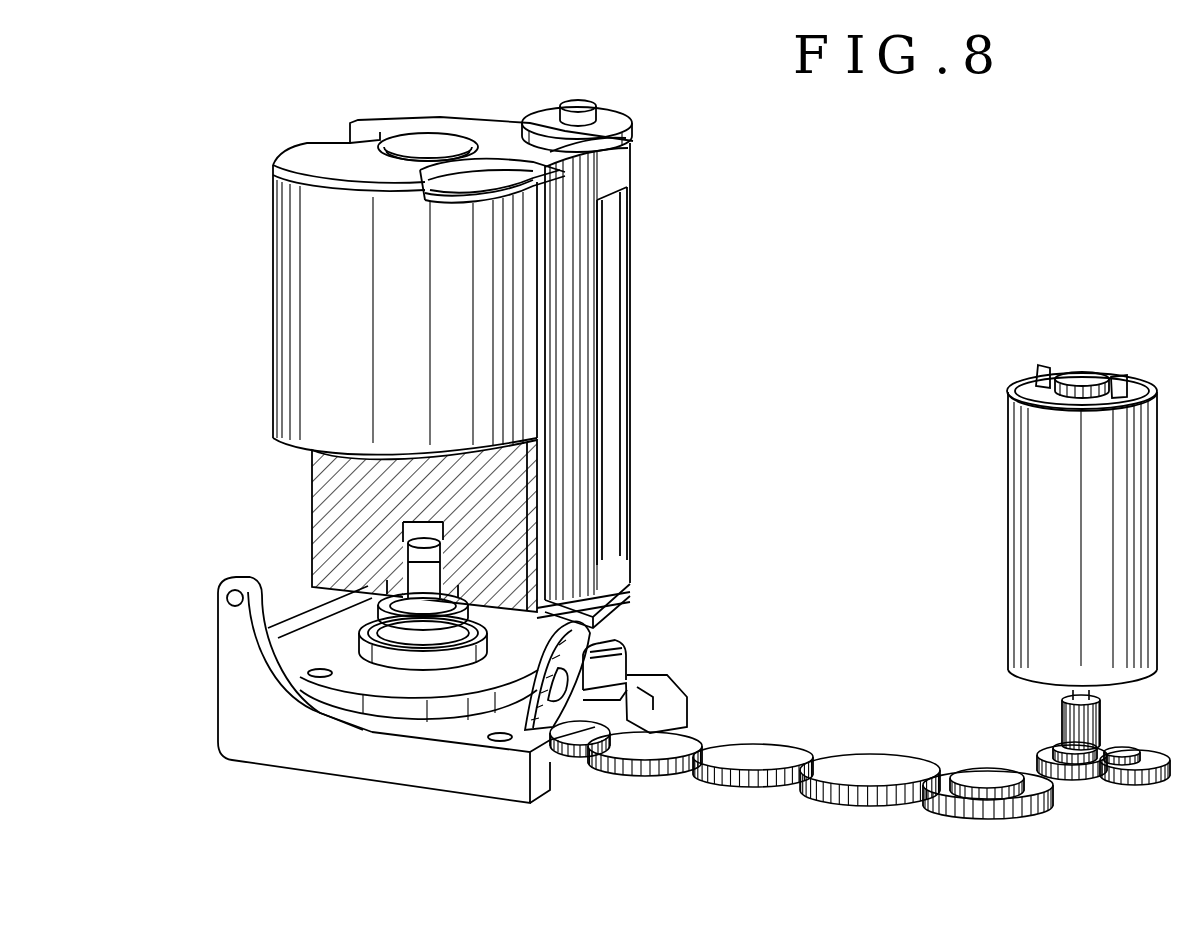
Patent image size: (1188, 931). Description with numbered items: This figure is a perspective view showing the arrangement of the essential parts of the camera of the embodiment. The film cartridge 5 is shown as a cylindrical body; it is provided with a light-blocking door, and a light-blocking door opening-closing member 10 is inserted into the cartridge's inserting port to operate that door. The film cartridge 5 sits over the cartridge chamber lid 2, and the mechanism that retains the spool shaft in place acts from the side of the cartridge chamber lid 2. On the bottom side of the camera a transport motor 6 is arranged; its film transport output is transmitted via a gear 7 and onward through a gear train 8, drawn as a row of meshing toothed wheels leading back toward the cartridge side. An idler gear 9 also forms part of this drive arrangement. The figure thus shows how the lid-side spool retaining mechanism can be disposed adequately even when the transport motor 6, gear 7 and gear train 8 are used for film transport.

The cartridge chamber lid 2 is at (293, 740).
The film cartridge 5 is at (323, 300).
The transport motor 6 is at (1055, 478).
The gear 7 is at (1067, 722).
The gear train 8 is at (1170, 793).
The idler gear 9 is at (572, 778).
The light-blocking door opening-closing member 10 is at (620, 112).